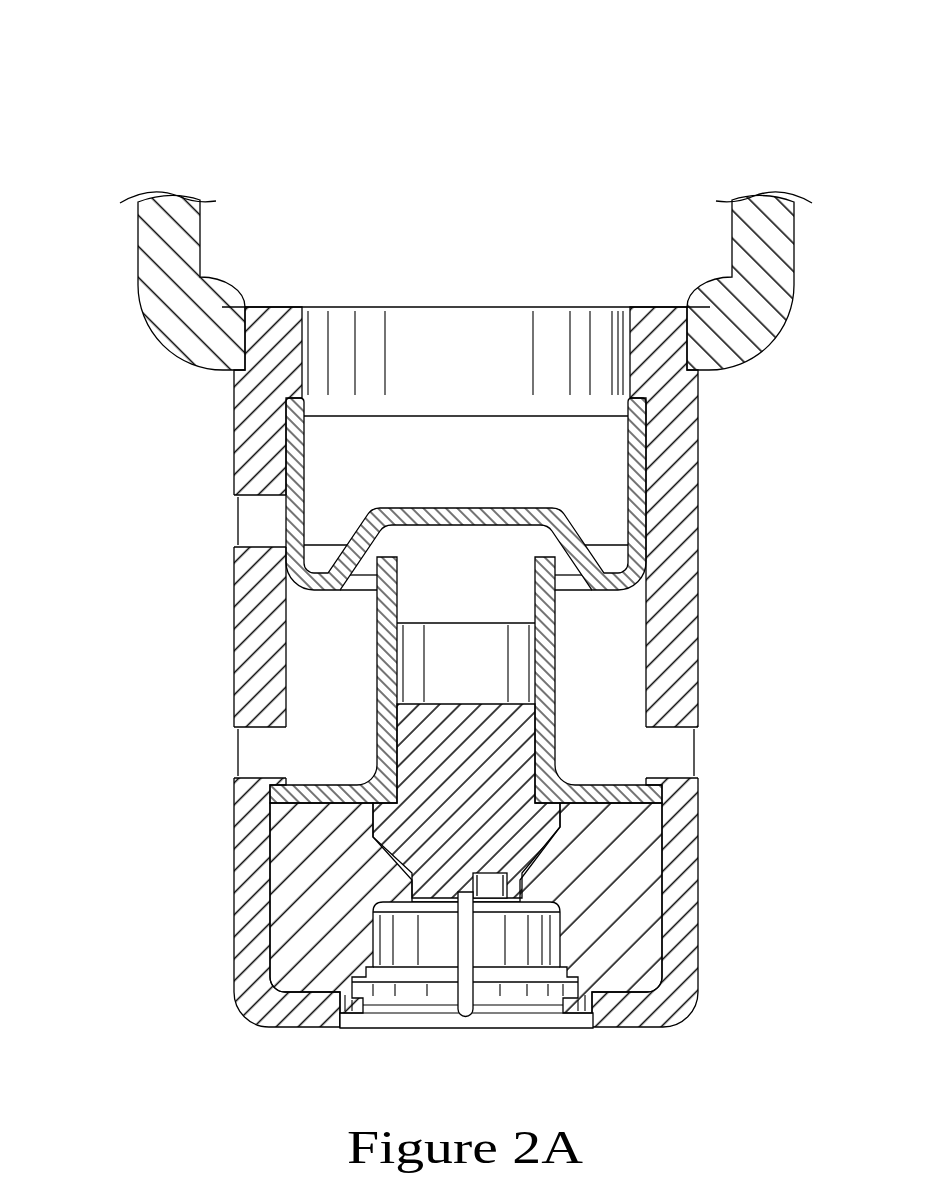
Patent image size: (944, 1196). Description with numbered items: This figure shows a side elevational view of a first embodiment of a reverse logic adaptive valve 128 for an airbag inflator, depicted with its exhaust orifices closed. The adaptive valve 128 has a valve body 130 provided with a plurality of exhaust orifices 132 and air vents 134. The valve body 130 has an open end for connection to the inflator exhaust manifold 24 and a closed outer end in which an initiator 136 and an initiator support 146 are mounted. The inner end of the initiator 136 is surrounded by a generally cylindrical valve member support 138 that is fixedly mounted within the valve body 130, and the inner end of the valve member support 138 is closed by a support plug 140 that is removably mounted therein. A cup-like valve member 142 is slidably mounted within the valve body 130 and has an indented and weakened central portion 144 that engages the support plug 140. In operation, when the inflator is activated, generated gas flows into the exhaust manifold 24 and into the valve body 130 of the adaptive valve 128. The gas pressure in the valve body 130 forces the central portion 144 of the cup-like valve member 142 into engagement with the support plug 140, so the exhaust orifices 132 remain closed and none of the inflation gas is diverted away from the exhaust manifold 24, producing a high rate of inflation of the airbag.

The reverse logic adaptive valve 128 is at (80, 109).
The exhaust manifold 24 is at (779, 218).
The valve body 130 is at (248, 406).
The exhaust orifices 132 is at (237, 528).
The air vents 134 is at (680, 755).
The initiator 136 is at (408, 838).
The valve member support 138 is at (386, 677).
The support plug 140 is at (523, 603).
The cup-like valve member 142 is at (292, 463).
The indented and weakened central portion 144 is at (470, 508).
The initiator support 146 is at (610, 928).